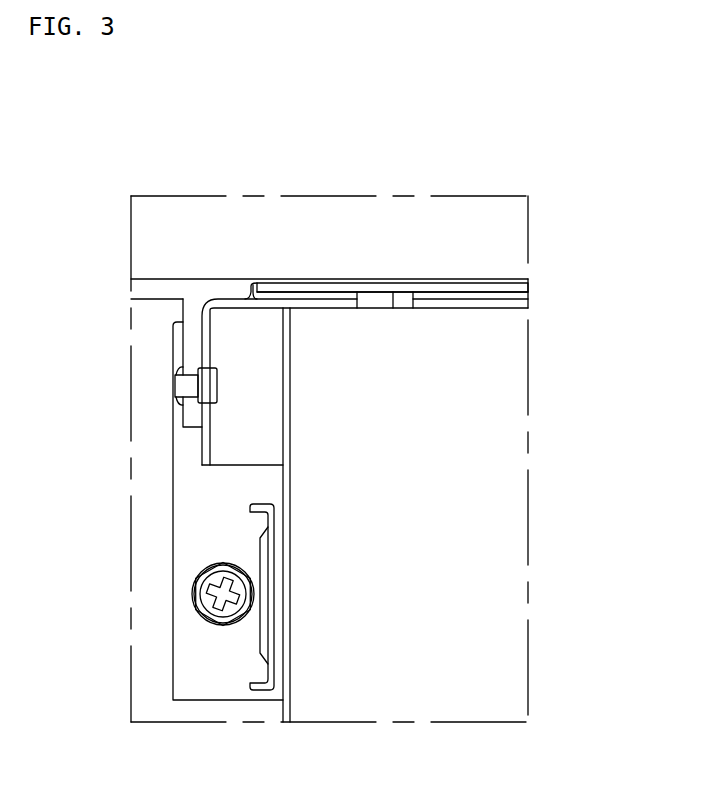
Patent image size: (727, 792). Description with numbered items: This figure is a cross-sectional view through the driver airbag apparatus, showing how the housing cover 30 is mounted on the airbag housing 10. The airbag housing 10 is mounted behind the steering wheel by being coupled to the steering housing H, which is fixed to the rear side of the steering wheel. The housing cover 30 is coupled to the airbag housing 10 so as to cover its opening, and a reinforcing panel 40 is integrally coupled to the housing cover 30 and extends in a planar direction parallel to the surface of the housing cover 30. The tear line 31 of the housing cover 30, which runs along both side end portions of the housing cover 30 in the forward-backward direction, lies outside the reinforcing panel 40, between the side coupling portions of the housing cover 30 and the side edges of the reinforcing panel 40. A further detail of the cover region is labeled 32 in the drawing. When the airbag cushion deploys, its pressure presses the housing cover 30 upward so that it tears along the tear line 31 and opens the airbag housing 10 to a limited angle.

The airbag housing 10 is at (503, 532).
The housing cover 30 is at (472, 280).
The tear line 31 is at (252, 281).
The bracket 32 is at (191, 327).
The reinforcing panel 40 is at (528, 288).
The steering housing H is at (152, 556).